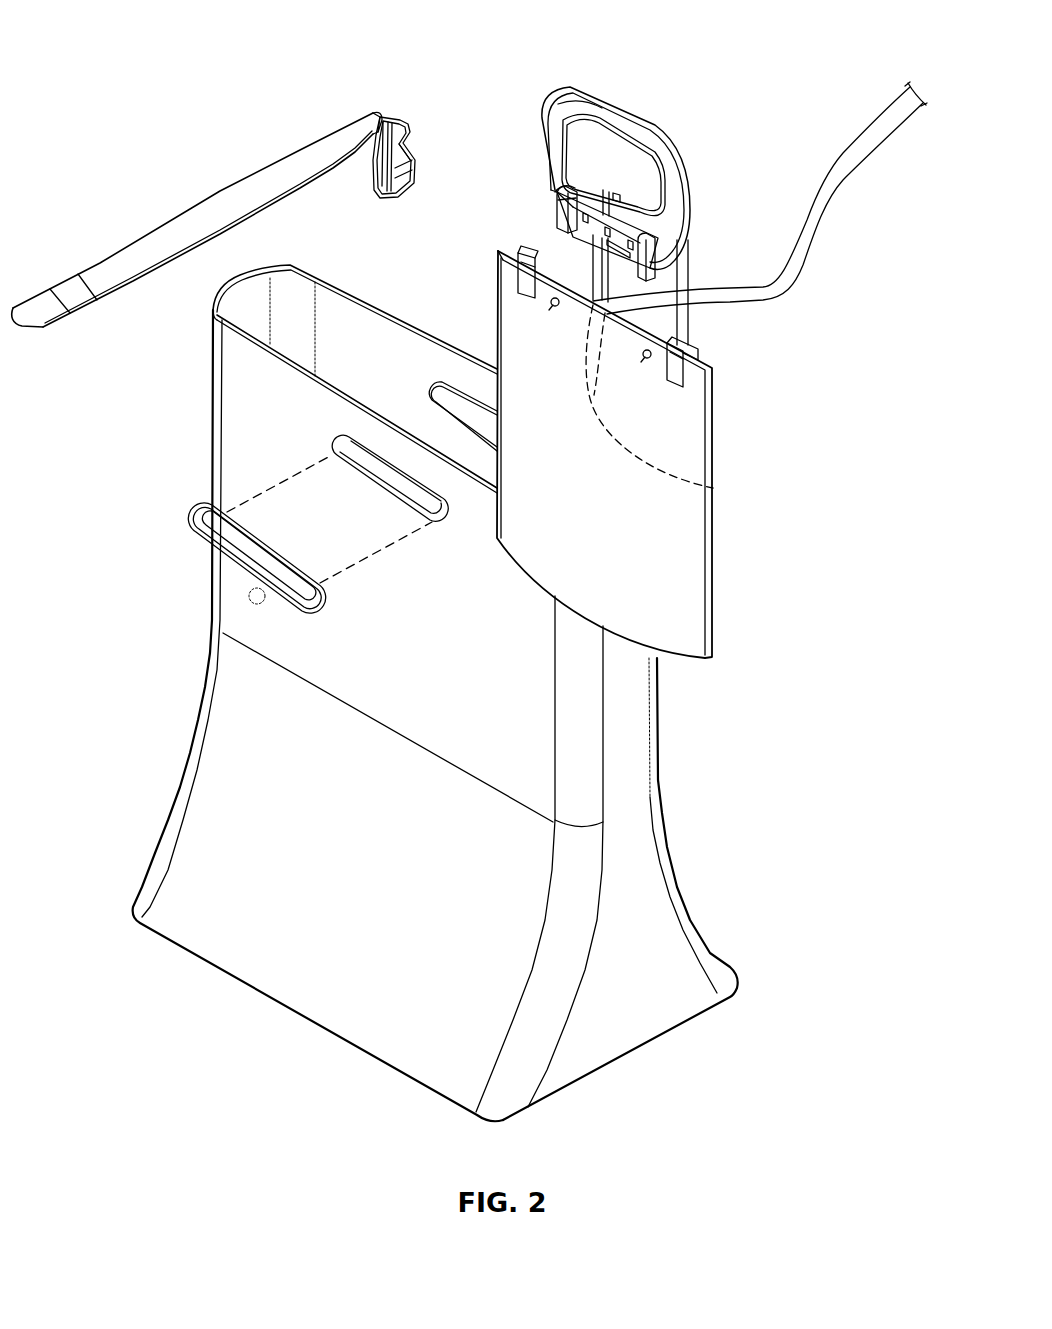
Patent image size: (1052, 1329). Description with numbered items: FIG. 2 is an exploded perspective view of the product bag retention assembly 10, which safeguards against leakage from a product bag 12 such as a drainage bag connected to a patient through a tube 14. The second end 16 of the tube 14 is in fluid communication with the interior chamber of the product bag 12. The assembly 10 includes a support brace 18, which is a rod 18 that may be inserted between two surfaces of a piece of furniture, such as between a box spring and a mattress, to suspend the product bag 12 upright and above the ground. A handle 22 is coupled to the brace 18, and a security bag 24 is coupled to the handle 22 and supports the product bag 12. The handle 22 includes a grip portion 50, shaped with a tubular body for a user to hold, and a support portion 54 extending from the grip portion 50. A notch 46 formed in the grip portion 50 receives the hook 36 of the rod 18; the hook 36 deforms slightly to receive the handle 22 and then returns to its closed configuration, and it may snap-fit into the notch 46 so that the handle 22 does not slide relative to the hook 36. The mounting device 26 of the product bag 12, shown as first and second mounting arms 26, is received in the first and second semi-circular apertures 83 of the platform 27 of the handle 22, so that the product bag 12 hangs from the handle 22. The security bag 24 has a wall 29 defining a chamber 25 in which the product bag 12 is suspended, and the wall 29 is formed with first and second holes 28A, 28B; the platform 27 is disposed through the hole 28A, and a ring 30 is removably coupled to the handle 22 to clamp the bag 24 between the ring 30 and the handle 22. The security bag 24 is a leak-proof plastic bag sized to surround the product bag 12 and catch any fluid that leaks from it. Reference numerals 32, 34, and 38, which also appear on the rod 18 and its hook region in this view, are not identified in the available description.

The product bag retention assembly 10 is at (108, 40).
The product bag 12 is at (641, 446).
The tube 14 is at (827, 197).
The second end 16 is at (713, 488).
The support brace 18 is at (196, 219).
The handle 22 is at (605, 163).
The security bag 24 is at (630, 887).
The chamber 25 is at (432, 666).
The mounting device 26 is at (560, 220).
The platform 27 is at (663, 258).
The first hole 28A is at (355, 443).
The second hole 28B is at (457, 402).
The wall 29 is at (243, 844).
The ring 30 is at (203, 532).
The strap end 32 is at (44, 304).
The buckle bar 34 is at (380, 116).
The hook 36 is at (392, 128).
The strap edge 38 is at (236, 190).
The notch 46 is at (607, 133).
The grip portion 50 is at (650, 141).
The support portion 54 is at (665, 220).
The semi-circular apertures 83 is at (555, 198).